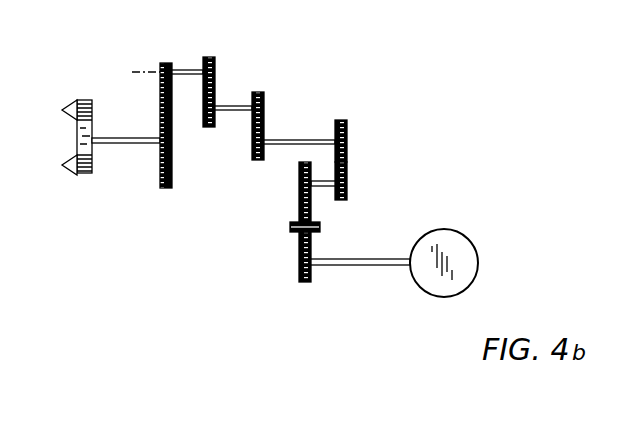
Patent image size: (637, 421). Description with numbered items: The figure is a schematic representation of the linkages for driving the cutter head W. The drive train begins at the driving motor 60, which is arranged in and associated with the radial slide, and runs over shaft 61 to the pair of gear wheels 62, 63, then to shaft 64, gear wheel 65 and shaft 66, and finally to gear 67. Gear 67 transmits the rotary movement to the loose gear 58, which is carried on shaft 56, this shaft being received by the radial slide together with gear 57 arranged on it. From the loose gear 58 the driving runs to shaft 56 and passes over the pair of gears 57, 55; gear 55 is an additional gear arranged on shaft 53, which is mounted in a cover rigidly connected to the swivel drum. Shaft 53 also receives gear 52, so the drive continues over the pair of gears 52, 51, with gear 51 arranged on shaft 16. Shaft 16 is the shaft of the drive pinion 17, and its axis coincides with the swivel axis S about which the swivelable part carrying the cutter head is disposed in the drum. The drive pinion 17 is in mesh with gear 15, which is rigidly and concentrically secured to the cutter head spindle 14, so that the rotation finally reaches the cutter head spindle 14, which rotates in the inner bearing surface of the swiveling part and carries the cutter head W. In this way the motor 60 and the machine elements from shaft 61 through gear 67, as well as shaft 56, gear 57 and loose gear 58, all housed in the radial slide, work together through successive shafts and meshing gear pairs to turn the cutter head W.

The cutter head W is at (88, 175).
The cutter head spindle 14 is at (135, 139).
The gear 15 is at (173, 160).
The shaft 16 is at (184, 70).
The drive pinion 17 is at (156, 64).
The axis S is at (142, 40).
The gear 51 is at (216, 58).
The gear 52 is at (206, 128).
The shaft 53 is at (227, 106).
The gear 55 is at (265, 93).
The shaft 56 is at (289, 140).
The gear 57 is at (252, 158).
The loose gear 58 is at (349, 128).
The driving motor 60 is at (455, 236).
The shaft 61 is at (344, 259).
The gear wheel 62 is at (298, 270).
The gear wheel 63 is at (290, 222).
The shaft 64 is at (291, 233).
The gear wheel 65 is at (298, 184).
The shaft 66 is at (326, 187).
The gear 67 is at (349, 181).